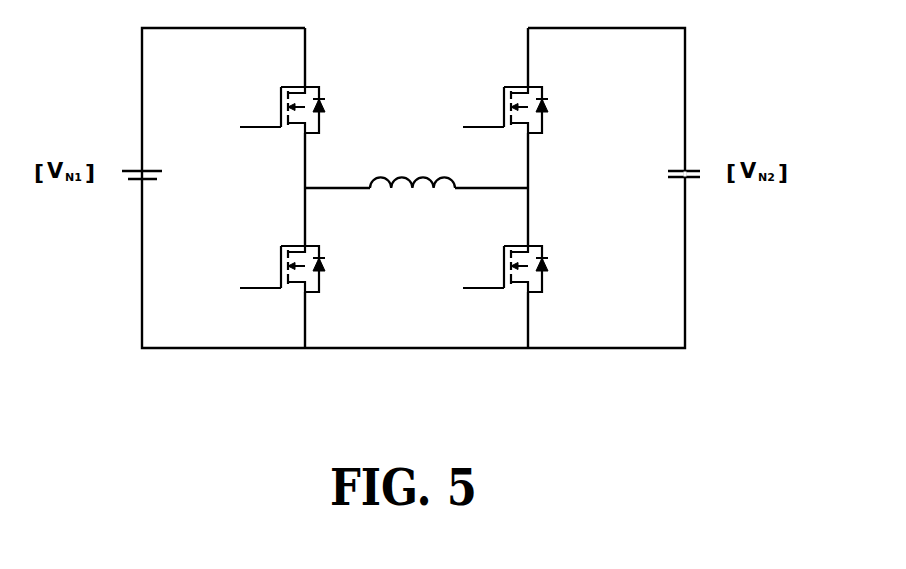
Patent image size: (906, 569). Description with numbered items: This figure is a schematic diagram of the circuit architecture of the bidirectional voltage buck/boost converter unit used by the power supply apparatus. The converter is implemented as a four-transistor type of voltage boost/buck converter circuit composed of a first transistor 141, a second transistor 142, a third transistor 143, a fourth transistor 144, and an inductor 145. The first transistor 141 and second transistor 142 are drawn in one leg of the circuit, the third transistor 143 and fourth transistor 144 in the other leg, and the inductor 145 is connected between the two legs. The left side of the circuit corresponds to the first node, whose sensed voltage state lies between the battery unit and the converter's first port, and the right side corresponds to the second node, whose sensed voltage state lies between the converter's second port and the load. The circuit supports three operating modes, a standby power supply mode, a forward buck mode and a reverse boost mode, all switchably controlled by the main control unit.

The first transistor (Q1) 141 is at (277, 261).
The second transistor (Q2) 142 is at (281, 106).
The third transistor (Q3) 143 is at (497, 110).
The fourth transistor (Q4) 144 is at (495, 268).
The inductor 145 is at (412, 162).